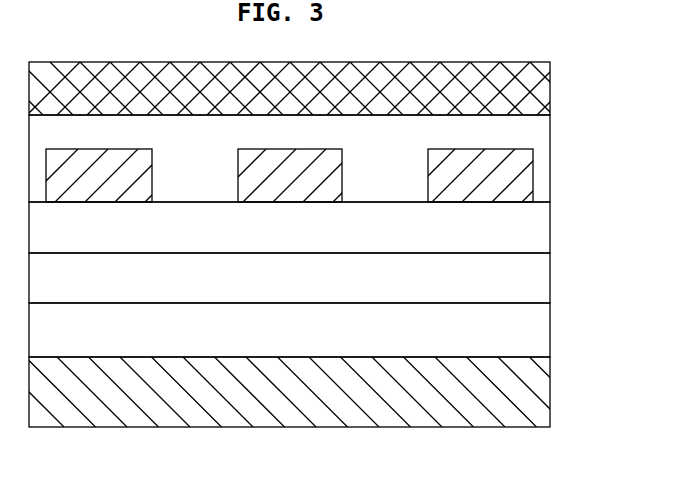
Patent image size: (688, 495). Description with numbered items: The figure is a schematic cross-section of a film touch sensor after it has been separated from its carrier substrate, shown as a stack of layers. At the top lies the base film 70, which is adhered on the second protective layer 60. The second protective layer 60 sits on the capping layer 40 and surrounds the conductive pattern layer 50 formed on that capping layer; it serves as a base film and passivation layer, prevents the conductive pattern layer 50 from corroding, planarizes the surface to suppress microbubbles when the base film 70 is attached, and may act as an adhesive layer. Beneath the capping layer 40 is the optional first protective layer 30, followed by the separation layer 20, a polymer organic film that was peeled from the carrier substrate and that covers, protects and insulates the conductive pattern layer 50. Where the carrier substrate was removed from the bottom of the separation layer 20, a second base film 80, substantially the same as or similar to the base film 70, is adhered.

The separation layer 20 is at (515, 333).
The first protective layer 30 is at (515, 280).
The capping layer 40 is at (515, 229).
The conductive pattern layer 50 is at (515, 177).
The second protective layer 60 is at (513, 133).
The base film 70 is at (513, 88).
The second base film 80 is at (515, 389).